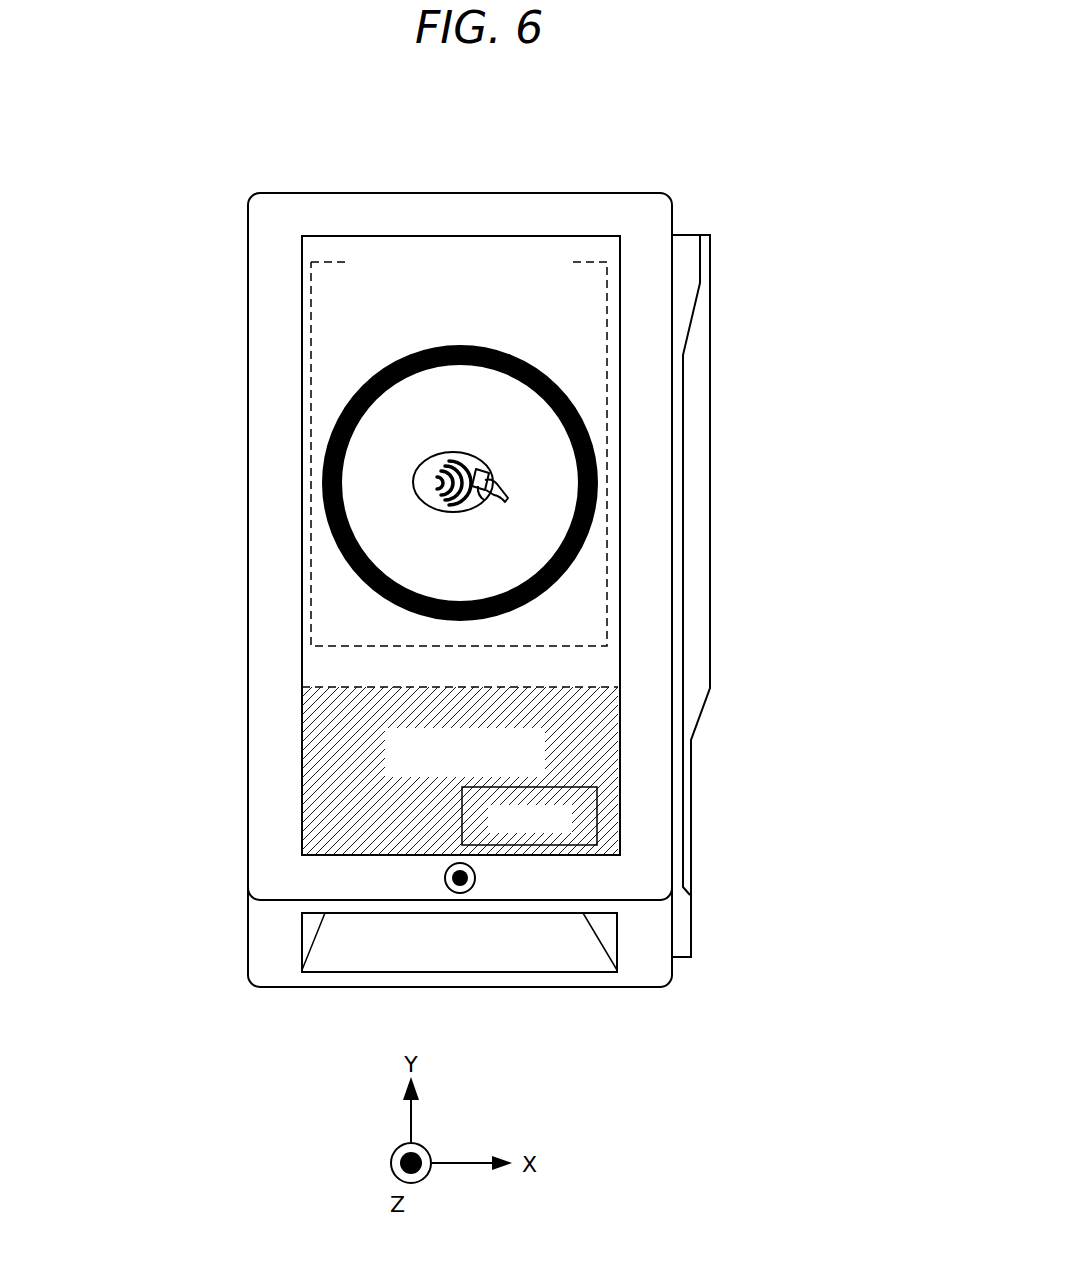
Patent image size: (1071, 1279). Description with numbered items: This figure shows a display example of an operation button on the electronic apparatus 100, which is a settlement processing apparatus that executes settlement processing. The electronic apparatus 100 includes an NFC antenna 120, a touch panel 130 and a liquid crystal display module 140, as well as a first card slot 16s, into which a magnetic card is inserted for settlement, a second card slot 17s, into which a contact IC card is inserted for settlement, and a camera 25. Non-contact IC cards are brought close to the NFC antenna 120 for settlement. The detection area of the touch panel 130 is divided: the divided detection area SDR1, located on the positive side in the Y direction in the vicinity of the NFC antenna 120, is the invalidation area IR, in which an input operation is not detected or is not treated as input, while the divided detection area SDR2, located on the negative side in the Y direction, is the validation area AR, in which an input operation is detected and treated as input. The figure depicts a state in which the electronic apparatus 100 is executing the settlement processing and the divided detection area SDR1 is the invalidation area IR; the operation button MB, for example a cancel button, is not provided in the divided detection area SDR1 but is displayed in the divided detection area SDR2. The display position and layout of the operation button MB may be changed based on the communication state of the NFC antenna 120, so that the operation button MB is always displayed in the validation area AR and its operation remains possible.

The electronic apparatus 100 is at (563, 128).
The first card slot 16s is at (683, 313).
The NFC antenna 120 is at (603, 621).
The touch panel 130 is at (582, 454).
The liquid crystal display module 140 is at (620, 453).
The divided detection area SDR1 is at (357, 476).
The invalidation area IR is at (355, 607).
The divided detection area SDR2 is at (374, 771).
The validation area AR is at (322, 773).
The operation button MB is at (597, 802).
The camera 25 is at (473, 872).
The second card slot 17s is at (515, 932).